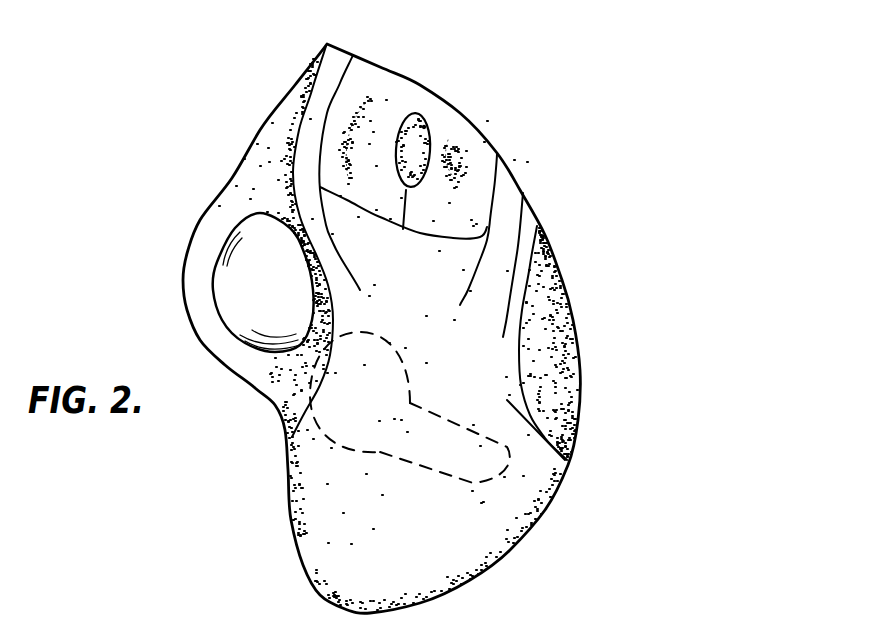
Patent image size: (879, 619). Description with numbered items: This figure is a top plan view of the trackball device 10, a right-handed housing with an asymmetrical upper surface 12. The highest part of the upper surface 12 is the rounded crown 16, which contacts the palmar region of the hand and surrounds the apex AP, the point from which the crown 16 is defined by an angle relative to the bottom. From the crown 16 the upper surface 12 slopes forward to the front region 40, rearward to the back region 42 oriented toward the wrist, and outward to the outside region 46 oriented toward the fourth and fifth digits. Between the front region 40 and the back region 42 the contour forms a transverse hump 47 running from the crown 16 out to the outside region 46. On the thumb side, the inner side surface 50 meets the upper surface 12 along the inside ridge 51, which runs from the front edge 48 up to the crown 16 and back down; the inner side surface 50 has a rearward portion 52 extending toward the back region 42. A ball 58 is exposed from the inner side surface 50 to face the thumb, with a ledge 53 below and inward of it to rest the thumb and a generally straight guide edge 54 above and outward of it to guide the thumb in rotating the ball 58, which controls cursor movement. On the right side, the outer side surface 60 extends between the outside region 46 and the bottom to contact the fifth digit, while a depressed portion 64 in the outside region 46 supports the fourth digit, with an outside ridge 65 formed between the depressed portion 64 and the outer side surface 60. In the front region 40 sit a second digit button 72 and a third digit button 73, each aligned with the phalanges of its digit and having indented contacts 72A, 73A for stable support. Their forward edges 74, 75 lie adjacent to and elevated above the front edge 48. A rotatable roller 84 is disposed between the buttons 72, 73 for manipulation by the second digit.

The trackball device 10 is at (623, 107).
The upper surface 12 is at (417, 325).
The crown 16 is at (350, 433).
The front region 40 is at (416, 113).
The back region 42 is at (347, 560).
The outside region 46 is at (565, 462).
The transverse hump 47 is at (457, 460).
The front edge 48 is at (353, 50).
The inner side surface 50 is at (263, 370).
The inside ridge 51 is at (333, 308).
The rearward portion 52 is at (290, 523).
The ledge 53 is at (193, 289).
The guide edge 54 is at (314, 262).
The ball 58 is at (271, 293).
The outer side surface 60 is at (560, 293).
The depressed portion 64 is at (507, 233).
The outside ridge 65 is at (540, 233).
The second digit button 72 is at (373, 197).
The indented contact 72A is at (367, 100).
The third digit button 73 is at (465, 227).
The indented contact 73A is at (460, 157).
The forward edge 74 is at (397, 70).
The forward edge 75 is at (463, 104).
The roller 84 is at (425, 125).
The apex AP is at (323, 368).